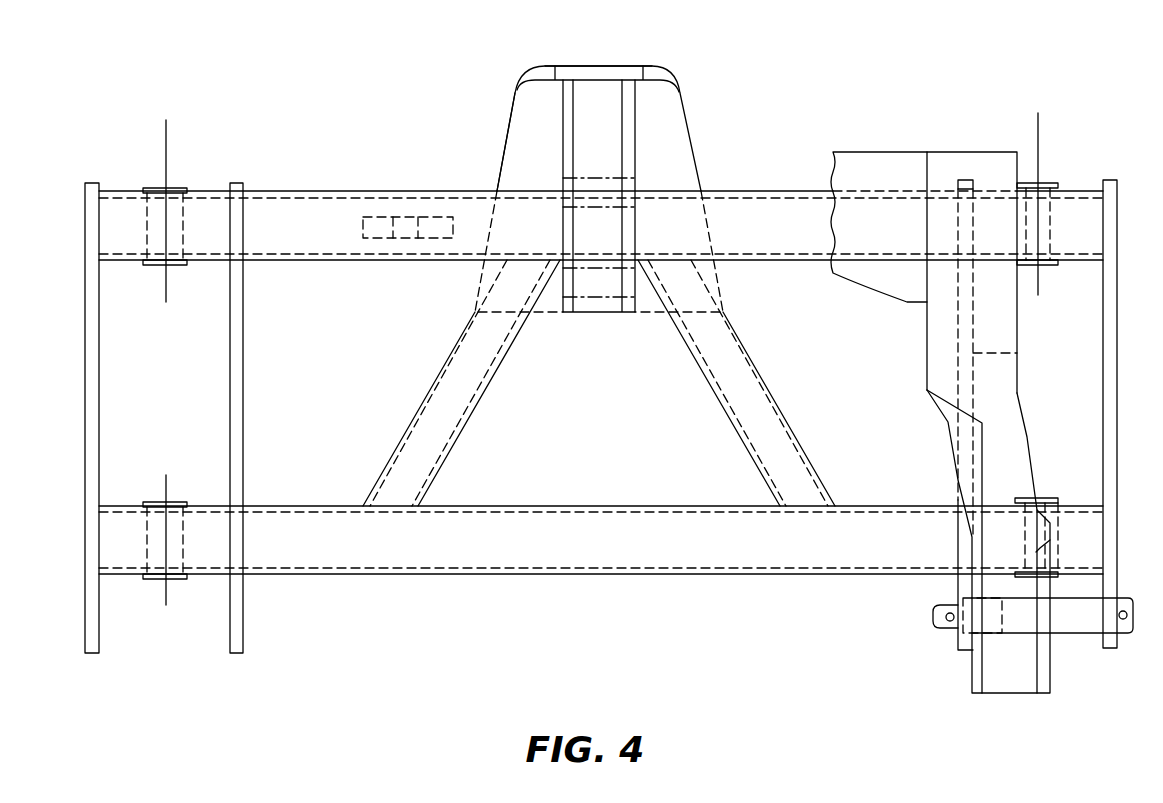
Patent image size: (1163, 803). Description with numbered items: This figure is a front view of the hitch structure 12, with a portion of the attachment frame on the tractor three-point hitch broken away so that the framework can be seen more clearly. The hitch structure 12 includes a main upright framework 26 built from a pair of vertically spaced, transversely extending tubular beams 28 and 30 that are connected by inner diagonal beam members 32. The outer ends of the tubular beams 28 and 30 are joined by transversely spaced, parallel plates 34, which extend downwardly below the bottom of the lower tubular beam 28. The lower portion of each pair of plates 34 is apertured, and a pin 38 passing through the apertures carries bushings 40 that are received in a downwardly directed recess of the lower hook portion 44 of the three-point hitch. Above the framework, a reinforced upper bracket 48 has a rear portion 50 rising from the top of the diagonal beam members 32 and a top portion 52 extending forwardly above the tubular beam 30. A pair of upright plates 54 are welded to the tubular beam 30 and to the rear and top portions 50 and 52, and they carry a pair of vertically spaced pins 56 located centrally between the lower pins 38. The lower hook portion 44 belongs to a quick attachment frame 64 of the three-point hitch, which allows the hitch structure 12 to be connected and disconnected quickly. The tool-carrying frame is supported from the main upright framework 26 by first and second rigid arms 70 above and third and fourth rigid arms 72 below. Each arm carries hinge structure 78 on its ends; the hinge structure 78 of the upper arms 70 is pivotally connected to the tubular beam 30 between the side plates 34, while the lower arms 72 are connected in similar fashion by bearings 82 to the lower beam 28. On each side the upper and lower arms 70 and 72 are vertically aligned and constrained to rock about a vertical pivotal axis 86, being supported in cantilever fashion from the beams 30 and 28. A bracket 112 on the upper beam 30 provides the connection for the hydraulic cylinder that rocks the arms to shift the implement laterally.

The hitch structure 12 is at (333, 70).
The main upright framework 26 is at (748, 600).
The tubular beam 28 is at (866, 565).
The tubular beam 30 is at (775, 197).
The inner diagonal beam members 32 is at (482, 398).
The plates 34 is at (230, 353).
The pin 38 is at (947, 629).
The bushings 40 is at (995, 633).
The lower hook portion 44 is at (1052, 691).
The reinforced upper bracket 48 is at (522, 82).
The rear portion 50 is at (508, 128).
The top portion 52 is at (597, 66).
The upright plates 54 is at (575, 143).
The pins 56 is at (600, 202).
The quick attachment frame 64 is at (893, 152).
The rigid arms 70 is at (190, 213).
The rigid arms 72 is at (190, 541).
The front hinge structure 78 is at (158, 188).
The bearings 82 is at (1050, 545).
The vertical pivotal axis 86 is at (166, 130).
The bracket 112 is at (385, 215).